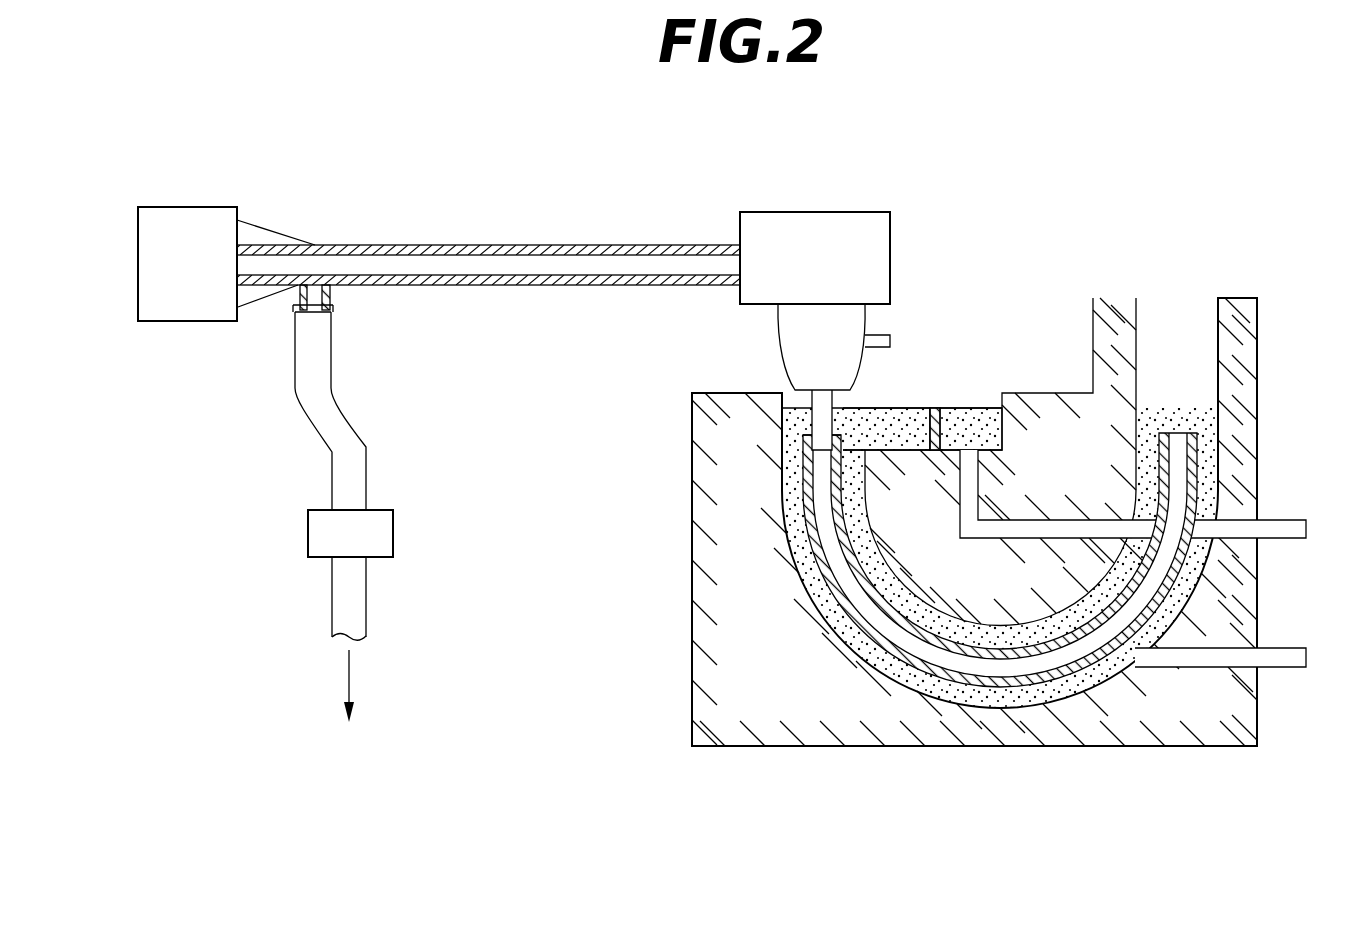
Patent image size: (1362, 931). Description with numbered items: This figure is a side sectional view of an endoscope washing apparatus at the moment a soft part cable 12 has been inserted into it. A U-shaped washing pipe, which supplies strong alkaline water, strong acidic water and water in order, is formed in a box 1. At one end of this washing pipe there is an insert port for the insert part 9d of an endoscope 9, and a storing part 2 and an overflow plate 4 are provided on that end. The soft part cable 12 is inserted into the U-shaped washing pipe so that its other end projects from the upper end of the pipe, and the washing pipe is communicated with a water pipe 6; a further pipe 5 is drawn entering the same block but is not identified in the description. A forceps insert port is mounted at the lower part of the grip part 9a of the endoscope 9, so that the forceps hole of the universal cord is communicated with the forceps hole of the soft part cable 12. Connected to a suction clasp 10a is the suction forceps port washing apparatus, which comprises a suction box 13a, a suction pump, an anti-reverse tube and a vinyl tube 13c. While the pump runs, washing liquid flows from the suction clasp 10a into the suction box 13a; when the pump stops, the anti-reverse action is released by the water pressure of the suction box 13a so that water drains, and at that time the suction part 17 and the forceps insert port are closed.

The box 1 is at (808, 758).
The storing part 2 is at (923, 408).
The overflow plate 4 is at (938, 430).
The supply pipe 5 is at (1285, 525).
The water pipe 6 is at (1287, 665).
The endoscope 9 is at (830, 212).
The grip part 9a is at (783, 347).
The insert part 9d is at (838, 408).
The suction clasp 10a is at (550, 245).
The soft part cable 12 is at (1037, 690).
The suction box 13a is at (388, 533).
The vinyl tube 13c is at (366, 451).
The suction part 17 is at (889, 335).